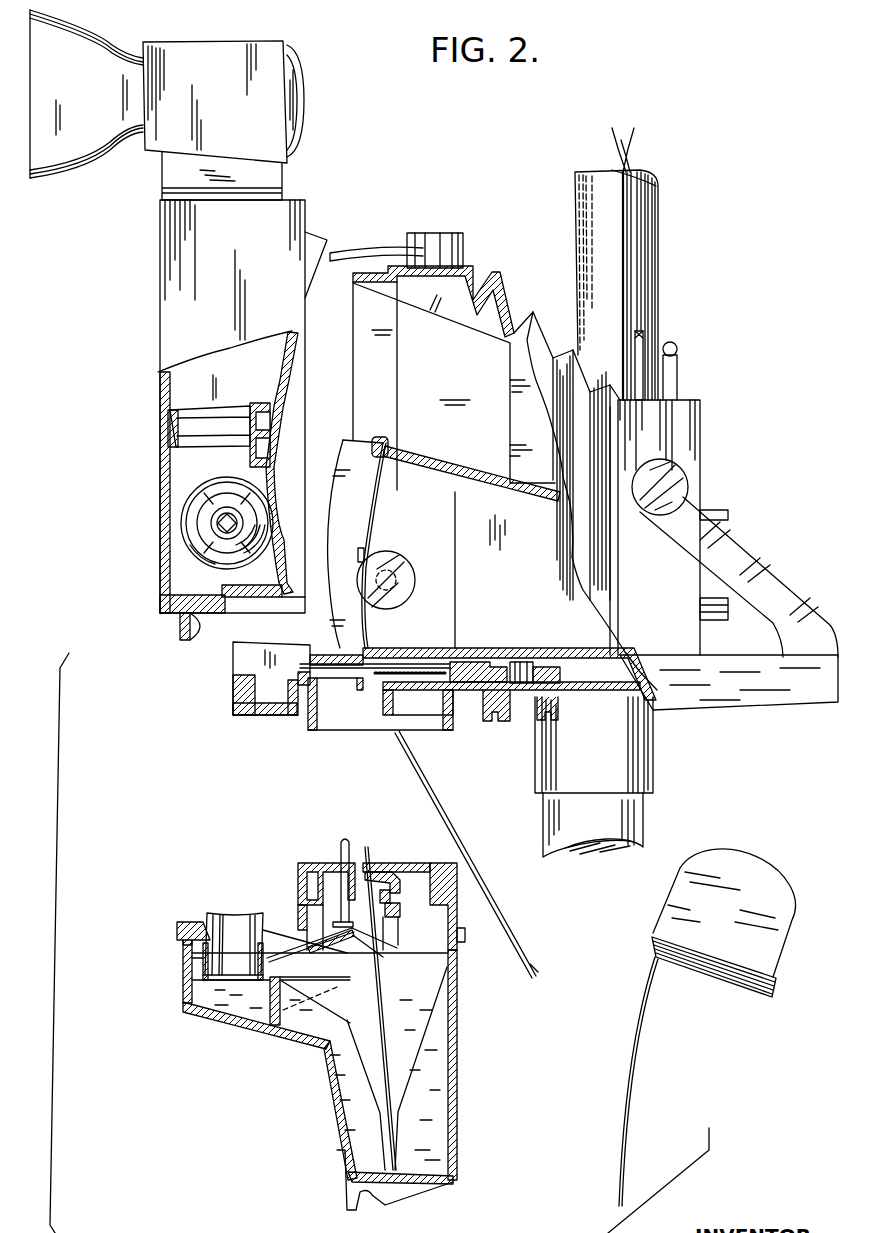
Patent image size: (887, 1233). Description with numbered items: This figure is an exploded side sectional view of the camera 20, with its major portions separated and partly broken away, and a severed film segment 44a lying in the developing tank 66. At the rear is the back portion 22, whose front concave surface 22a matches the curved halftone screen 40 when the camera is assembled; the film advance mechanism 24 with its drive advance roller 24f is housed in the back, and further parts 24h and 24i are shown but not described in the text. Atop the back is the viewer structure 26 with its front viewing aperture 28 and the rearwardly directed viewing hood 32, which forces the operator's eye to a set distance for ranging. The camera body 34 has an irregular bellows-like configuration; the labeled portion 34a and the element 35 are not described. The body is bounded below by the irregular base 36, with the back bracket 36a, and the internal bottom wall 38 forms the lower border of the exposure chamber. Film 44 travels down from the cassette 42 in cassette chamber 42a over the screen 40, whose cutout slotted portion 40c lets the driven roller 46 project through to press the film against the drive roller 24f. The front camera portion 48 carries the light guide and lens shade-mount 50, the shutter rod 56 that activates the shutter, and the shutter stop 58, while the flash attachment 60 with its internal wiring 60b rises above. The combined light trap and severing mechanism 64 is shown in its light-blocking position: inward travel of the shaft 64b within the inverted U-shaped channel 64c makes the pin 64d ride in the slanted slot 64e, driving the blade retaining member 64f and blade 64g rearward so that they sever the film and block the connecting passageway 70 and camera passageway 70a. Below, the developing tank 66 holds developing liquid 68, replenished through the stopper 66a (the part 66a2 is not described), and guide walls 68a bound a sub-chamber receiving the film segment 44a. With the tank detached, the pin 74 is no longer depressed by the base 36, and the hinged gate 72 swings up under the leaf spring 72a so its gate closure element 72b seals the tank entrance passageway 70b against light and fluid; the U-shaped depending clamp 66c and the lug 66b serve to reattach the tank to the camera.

The camera 20 is at (735, 150).
The back portion 22 is at (160, 308).
The front concave surface 22a is at (292, 366).
The film advance mechanism 24 is at (215, 485).
The drive advance roller 24f is at (192, 510).
The dial center hub 24i is at (212, 526).
The dial indicator 24h is at (192, 564).
The viewer structure 26 is at (290, 40).
The front viewing aperture 28 is at (302, 103).
The viewing hood 32 is at (82, 147).
The camera body 34 is at (505, 297).
The container wall 34a is at (530, 592).
The flexible strip 35 is at (435, 246).
The base 36 is at (470, 696).
The back bracket 36a is at (325, 655).
The internal bottom wall 38 is at (468, 655).
The curved halftone screen 40 is at (374, 500).
The cutout slotted portion 40c is at (360, 560).
The cassette 42 is at (764, 866).
The cassette chamber 42a is at (450, 352).
The film 44 is at (643, 1048).
The exposed film segment 44a is at (374, 1016).
The driven roller 46 is at (400, 566).
The front camera portion 48 is at (703, 418).
The light guide and lens shade-mount 50 is at (728, 608).
The shutter rod 56 is at (672, 376).
The shutter stop 58 is at (641, 336).
The flash attachment 60 is at (658, 262).
The internal wiring 60b is at (628, 150).
The combined light trap and severing mechanism 64 is at (488, 663).
The shaft 64b is at (550, 706).
The inverted U-shaped channel 64c is at (497, 725).
The pin 64d is at (521, 662).
The slanted slot 64e is at (547, 667).
The blade retaining member 64f is at (456, 662).
The blade 64g is at (392, 666).
The developing tank 66 is at (330, 1103).
The stopper 66a is at (215, 912).
The tray bracket 66a2 is at (192, 953).
The lug 66b is at (344, 1180).
The U-shaped depending clamp 66c is at (533, 962).
The developing liquid 68 is at (432, 1108).
The guide walls 68a is at (435, 1033).
The connecting passageway 70 is at (371, 694).
The camera passageway 70a is at (364, 690).
The developing tank entrance passageway 70b is at (390, 866).
The hinged gate 72 is at (400, 940).
The leaf spring 72a is at (300, 935).
The gate closure element 72b is at (410, 876).
The pin 74 is at (339, 845).